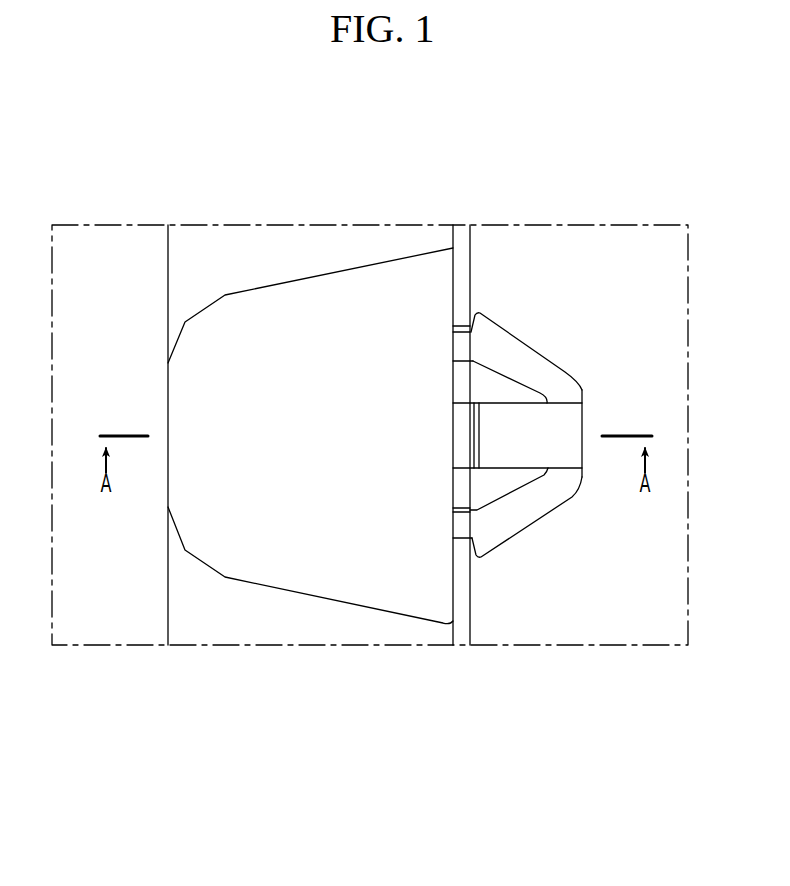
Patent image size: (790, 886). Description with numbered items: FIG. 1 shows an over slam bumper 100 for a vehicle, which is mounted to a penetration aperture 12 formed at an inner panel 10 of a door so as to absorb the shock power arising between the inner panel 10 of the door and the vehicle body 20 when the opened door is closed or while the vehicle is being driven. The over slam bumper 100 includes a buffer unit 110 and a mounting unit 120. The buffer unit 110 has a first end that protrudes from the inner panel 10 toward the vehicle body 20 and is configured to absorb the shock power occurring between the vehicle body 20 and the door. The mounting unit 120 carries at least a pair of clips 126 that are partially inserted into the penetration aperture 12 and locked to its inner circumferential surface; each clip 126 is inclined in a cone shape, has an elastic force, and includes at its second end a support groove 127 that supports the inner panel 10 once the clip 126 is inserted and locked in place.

The inner panel 10 is at (462, 238).
The penetration aperture 12 is at (450, 372).
The vehicle body 20 is at (116, 243).
The over slam bumper 100 is at (277, 232).
The buffer unit 110 is at (278, 570).
The mounting unit 120 is at (597, 354).
The clip 126 is at (515, 352).
The support groove 127 is at (449, 538).